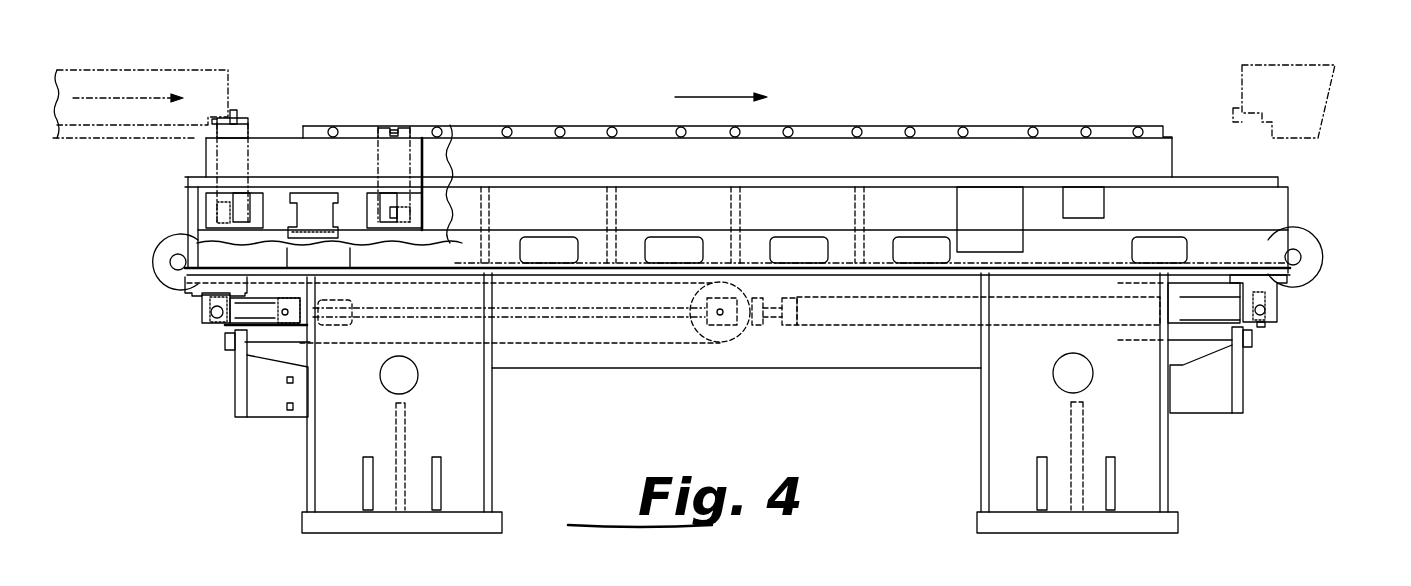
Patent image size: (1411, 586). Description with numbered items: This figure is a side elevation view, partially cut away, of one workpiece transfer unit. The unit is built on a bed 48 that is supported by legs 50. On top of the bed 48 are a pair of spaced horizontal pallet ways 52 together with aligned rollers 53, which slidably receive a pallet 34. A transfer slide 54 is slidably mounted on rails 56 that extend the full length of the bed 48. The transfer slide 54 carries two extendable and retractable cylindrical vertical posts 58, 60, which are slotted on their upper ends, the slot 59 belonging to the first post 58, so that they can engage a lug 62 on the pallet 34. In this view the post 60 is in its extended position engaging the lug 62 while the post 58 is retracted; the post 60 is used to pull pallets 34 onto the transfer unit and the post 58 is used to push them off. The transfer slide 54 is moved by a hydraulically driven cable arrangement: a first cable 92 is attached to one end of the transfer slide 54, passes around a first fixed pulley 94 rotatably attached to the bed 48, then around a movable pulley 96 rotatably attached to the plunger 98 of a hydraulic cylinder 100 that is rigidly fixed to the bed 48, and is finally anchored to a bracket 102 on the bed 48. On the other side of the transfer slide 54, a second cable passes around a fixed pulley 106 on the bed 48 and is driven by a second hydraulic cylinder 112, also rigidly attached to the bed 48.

The pallet 34 is at (141, 80).
The bed 48 is at (843, 232).
The legs 50 is at (470, 471).
The pallet ways 52 is at (590, 126).
The rollers 53 is at (507, 126).
The transfer slide 54 is at (275, 152).
The rails 56 is at (314, 182).
The vertical post 58 is at (381, 128).
The slot 59 is at (395, 129).
The vertical post 60 is at (249, 121).
The lug 62 is at (236, 112).
The first cable 92 is at (570, 286).
The first fixed pulley 94 is at (163, 270).
The movable pulley 96 is at (725, 327).
The plunger 98 is at (773, 322).
The hydraulic cylinder 100 is at (921, 325).
The bracket 102 is at (226, 340).
The fixed pulley 106 is at (1310, 243).
The second hydraulic cylinder 112 is at (265, 306).